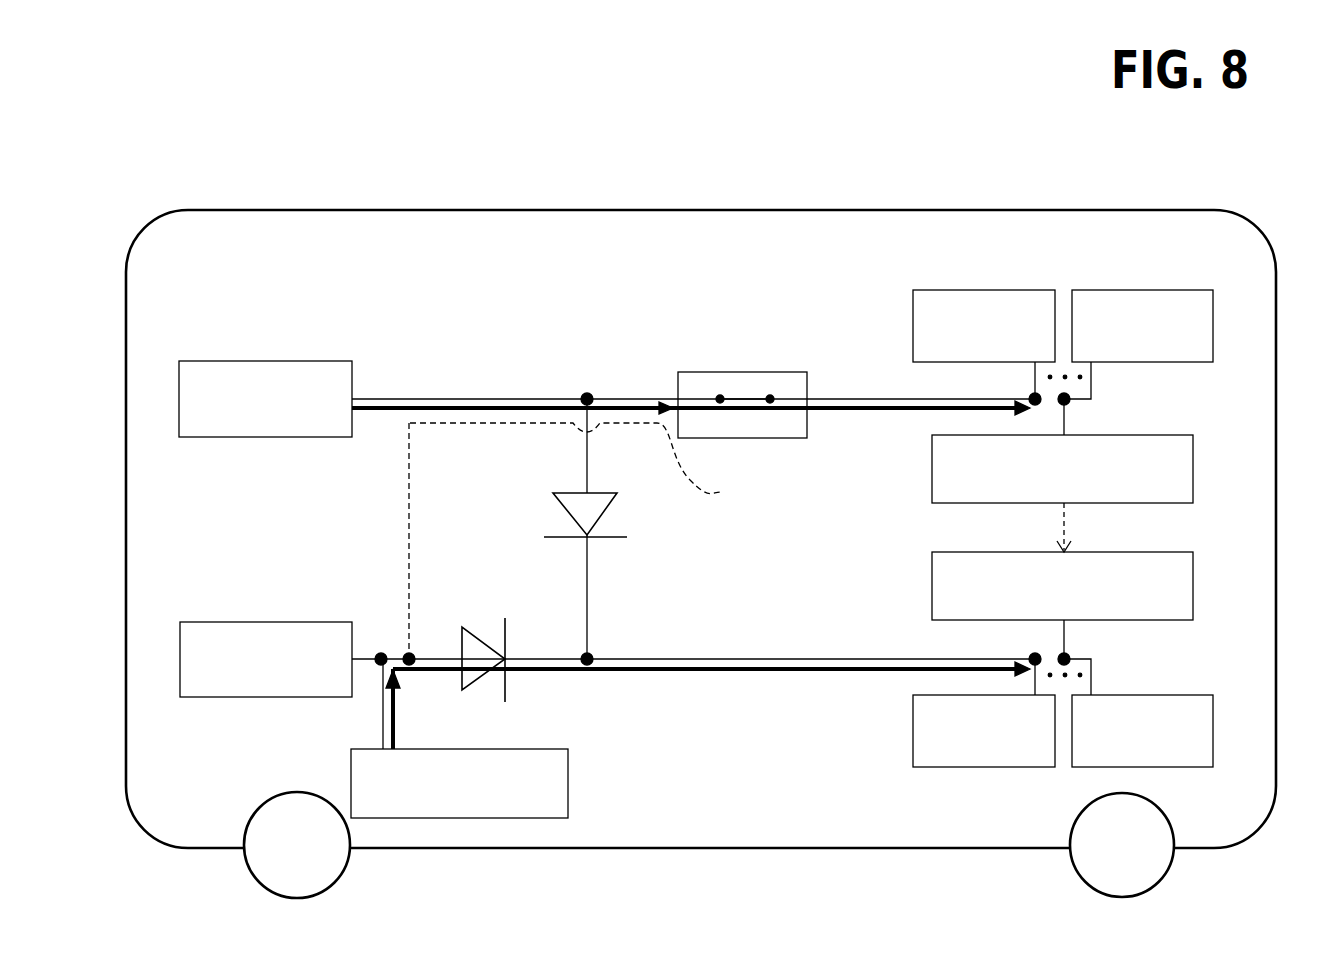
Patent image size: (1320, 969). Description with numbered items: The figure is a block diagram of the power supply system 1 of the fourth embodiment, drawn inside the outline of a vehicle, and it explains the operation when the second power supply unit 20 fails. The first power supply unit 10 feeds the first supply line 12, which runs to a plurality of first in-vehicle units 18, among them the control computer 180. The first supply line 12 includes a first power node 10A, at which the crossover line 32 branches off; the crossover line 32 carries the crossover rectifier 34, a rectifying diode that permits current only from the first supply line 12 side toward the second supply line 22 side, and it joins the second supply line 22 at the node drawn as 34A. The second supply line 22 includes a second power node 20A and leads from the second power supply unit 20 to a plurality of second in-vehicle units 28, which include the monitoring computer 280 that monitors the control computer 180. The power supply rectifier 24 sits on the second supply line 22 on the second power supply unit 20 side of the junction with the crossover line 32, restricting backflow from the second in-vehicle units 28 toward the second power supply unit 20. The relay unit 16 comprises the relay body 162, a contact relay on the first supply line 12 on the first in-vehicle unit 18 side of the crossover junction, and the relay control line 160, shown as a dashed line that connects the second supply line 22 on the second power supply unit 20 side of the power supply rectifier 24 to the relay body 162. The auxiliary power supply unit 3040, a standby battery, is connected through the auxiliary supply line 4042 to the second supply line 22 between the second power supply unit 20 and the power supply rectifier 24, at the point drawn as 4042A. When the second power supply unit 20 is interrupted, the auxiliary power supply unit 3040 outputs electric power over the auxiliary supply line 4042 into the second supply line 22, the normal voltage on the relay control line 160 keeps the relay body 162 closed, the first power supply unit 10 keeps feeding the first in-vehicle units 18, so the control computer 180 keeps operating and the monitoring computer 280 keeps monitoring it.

The power supply system 1 is at (441, 328).
The first power supply unit 10 is at (265, 361).
The first power node 10A is at (590, 396).
The first supply line 12 is at (550, 397).
The relay unit 16 is at (613, 515).
The relay body 162 is at (707, 438).
The relay control line 160 is at (770, 447).
The crossover rectifier 34 is at (606, 519).
The crossover line 32 is at (588, 596).
The connection point on second power supply line 34A is at (590, 652).
The second supply line 22 is at (677, 657).
The second power supply unit 20 is at (265, 621).
The second power node 20A is at (413, 652).
The connection point of auxiliary power supply 4042A is at (383, 652).
The power supply rectifier 24 is at (472, 636).
The auxiliary supply line 4042 is at (382, 707).
The auxiliary power supply unit 3040 is at (568, 790).
The first in-vehicle unit 18 is at (985, 290).
The control computer 180 is at (932, 493).
The second in-vehicle unit 28 is at (1003, 767).
The monitoring computer 280 is at (932, 585).